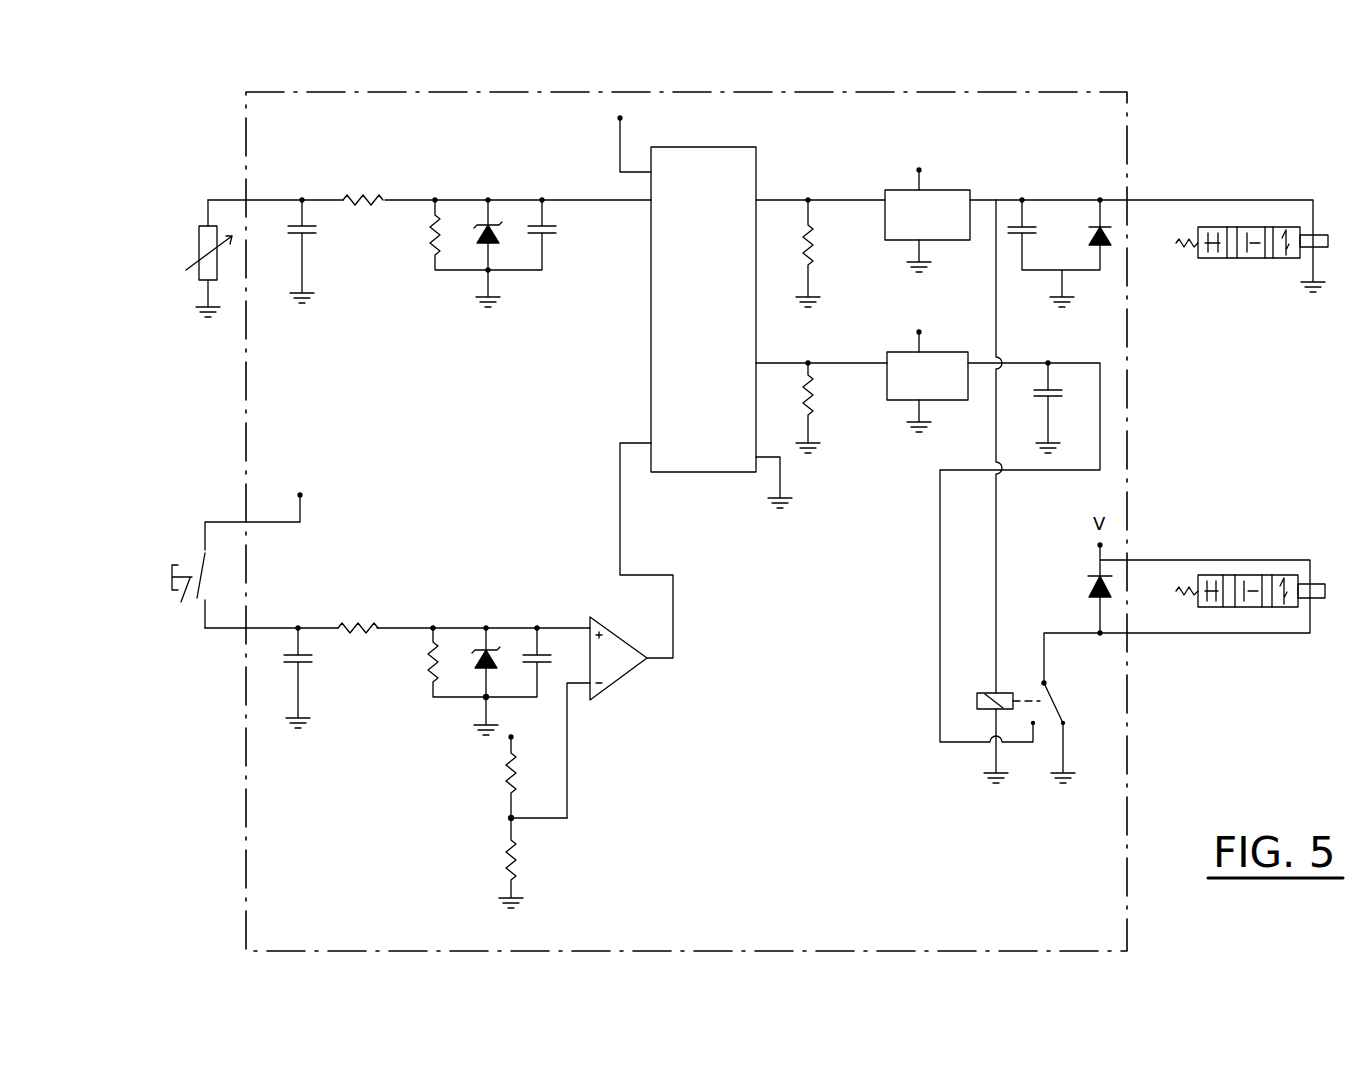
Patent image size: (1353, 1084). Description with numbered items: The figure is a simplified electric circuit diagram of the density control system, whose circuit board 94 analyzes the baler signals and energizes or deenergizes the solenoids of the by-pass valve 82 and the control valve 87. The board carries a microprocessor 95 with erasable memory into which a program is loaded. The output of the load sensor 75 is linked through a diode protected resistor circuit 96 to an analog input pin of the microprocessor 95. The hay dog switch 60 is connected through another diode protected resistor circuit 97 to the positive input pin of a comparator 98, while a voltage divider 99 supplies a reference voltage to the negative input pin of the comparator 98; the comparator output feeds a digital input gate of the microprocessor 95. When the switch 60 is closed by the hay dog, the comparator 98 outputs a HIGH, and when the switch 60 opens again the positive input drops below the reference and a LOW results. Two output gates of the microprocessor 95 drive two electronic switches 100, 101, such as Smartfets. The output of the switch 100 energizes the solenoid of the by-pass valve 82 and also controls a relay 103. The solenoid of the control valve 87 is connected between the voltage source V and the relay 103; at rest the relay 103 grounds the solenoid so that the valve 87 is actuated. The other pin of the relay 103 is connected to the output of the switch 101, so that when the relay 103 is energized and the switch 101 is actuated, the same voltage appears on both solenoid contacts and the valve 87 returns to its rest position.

The circuit board 94 is at (1127, 145).
The load sensor 75 is at (199, 250).
The diode protected resistor circuit 96 is at (423, 279).
The microprocessor 95 is at (716, 147).
The electronic switch 100 is at (945, 190).
The electronic switch 101 is at (936, 352).
The hay dog switch 60 is at (234, 555).
The diode protected resistor circuit 97 is at (461, 595).
The comparator 98 is at (613, 685).
The voltage divider 99 is at (490, 805).
The relay 103 is at (977, 701).
The control valve 87 is at (1233, 607).
The by-pass valve 82 is at (1243, 258).